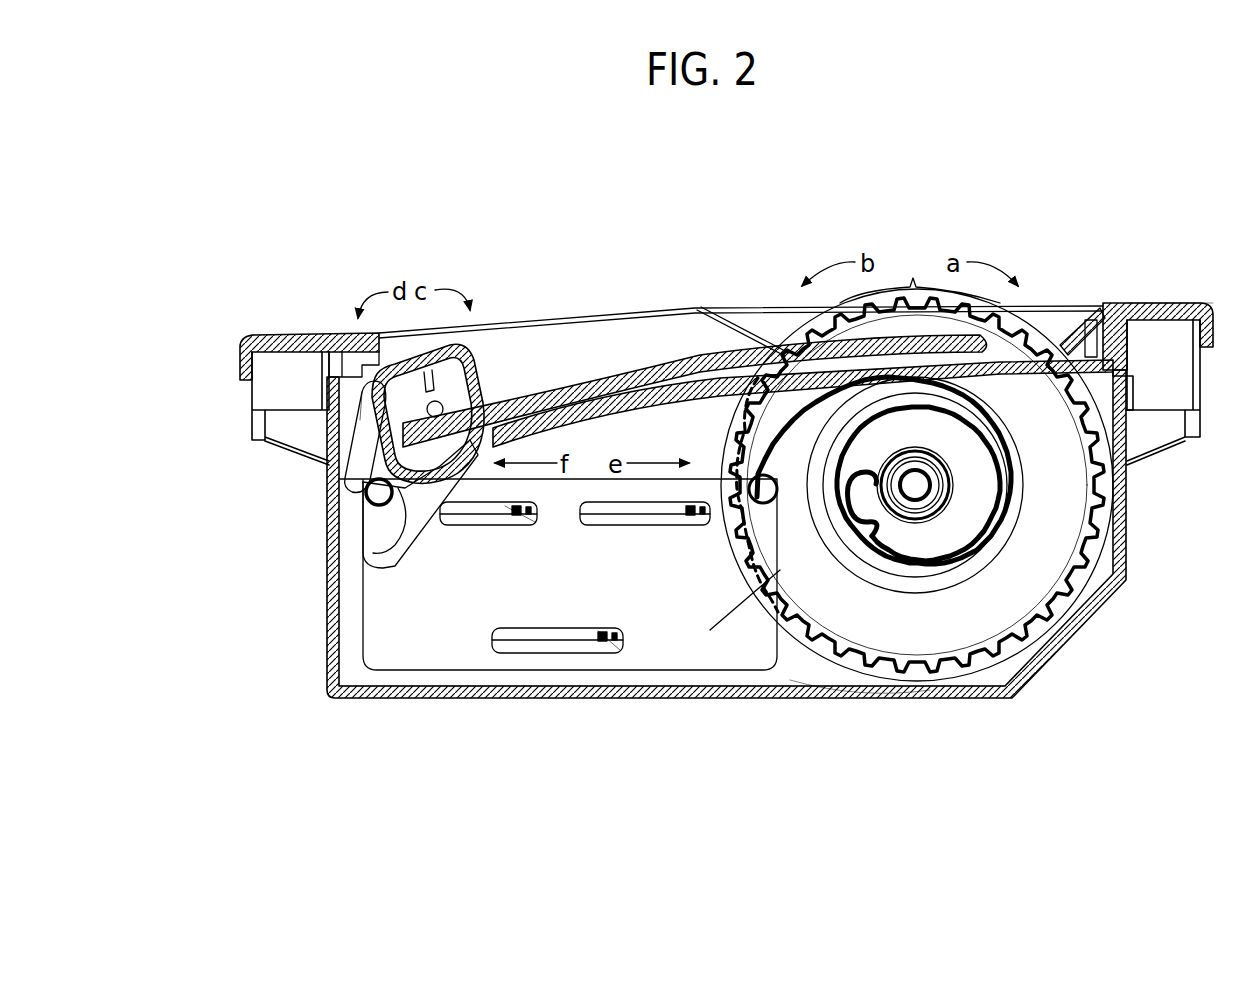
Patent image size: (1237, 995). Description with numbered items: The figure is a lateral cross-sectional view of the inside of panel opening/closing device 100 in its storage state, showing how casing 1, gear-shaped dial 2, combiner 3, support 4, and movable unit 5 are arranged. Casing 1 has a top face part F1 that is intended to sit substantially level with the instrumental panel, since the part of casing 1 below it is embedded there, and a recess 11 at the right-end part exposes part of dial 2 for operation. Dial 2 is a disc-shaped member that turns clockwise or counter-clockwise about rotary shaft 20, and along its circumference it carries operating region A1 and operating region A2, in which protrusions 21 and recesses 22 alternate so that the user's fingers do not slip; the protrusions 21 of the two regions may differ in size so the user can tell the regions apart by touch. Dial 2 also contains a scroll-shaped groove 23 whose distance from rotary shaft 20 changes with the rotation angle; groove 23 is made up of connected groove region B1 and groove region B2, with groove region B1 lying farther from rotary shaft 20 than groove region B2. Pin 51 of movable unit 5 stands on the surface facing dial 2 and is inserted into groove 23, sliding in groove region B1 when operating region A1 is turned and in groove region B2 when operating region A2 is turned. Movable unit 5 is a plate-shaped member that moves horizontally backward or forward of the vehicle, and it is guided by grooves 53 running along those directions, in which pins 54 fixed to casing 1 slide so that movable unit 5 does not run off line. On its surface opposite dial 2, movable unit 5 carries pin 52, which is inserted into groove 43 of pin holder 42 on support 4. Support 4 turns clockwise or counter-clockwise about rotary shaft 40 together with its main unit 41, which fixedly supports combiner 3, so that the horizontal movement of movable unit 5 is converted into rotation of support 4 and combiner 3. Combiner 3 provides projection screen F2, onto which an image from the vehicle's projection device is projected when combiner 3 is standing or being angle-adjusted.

The panel opening/closing device 100 is at (762, 224).
The casing 1 is at (1128, 489).
The recess 11 is at (1072, 306).
The top face part F1 is at (1170, 305).
The dial 2 is at (956, 505).
The rotary shaft 20 is at (905, 470).
The protrusions 21 is at (1120, 552).
The recesses 22 is at (1093, 537).
The scroll-shaped groove 23 is at (903, 547).
The combiner 3 is at (630, 377).
The projection screen F2 is at (693, 387).
The support 4 is at (347, 445).
The rotary shaft 40 is at (444, 412).
The main unit 41 is at (348, 415).
The pin holder 42 is at (347, 480).
The groove 43 is at (373, 557).
The movable unit 5 is at (447, 673).
The pin 51 is at (700, 525).
The pin 52 is at (370, 512).
The grooves 53 is at (470, 525).
The pins 54 is at (607, 642).
The operating region A1 is at (920, 276).
The operating region A2 is at (818, 657).
The groove region B1 is at (782, 492).
The groove region B2 is at (993, 437).